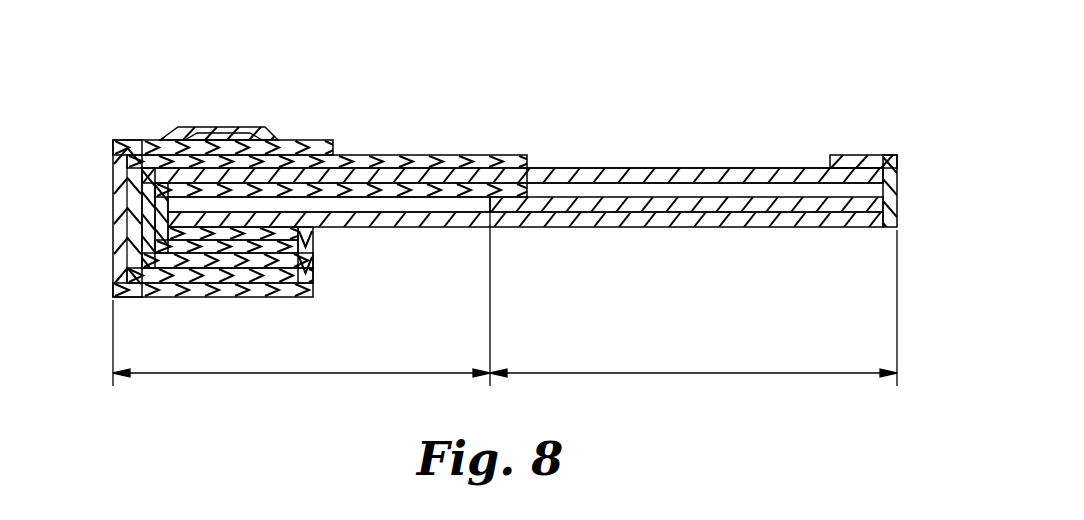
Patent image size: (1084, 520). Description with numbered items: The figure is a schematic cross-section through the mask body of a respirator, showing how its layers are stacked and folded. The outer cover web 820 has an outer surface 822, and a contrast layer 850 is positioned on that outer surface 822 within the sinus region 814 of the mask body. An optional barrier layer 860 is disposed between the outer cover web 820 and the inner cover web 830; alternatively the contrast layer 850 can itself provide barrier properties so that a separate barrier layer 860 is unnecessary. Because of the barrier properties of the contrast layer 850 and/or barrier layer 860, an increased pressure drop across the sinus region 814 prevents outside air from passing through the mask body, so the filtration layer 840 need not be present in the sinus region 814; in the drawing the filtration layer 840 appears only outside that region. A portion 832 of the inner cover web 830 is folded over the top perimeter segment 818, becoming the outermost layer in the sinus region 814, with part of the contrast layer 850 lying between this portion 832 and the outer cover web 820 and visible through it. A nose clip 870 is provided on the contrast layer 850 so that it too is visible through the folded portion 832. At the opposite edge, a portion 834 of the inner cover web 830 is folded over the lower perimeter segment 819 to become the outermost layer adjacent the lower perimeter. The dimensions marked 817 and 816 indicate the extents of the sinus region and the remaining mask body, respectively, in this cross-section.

The sinus region 814 is at (189, 107).
The second section length 816 is at (671, 386).
The first section length 817 is at (306, 386).
The top perimeter segment 818 is at (104, 151).
The lower perimeter segment 819 is at (914, 131).
The outer cover web 820 is at (580, 178).
The outer surface 822 is at (686, 172).
The inner cover web 830 is at (611, 214).
The portion of the inner cover web 832 is at (106, 281).
The portion of the inner cover web 834 is at (913, 200).
The filtration layer 840 is at (766, 205).
The contrast layer 850 is at (400, 160).
The barrier layer 860 is at (391, 196).
The nose clip 870 is at (222, 148).